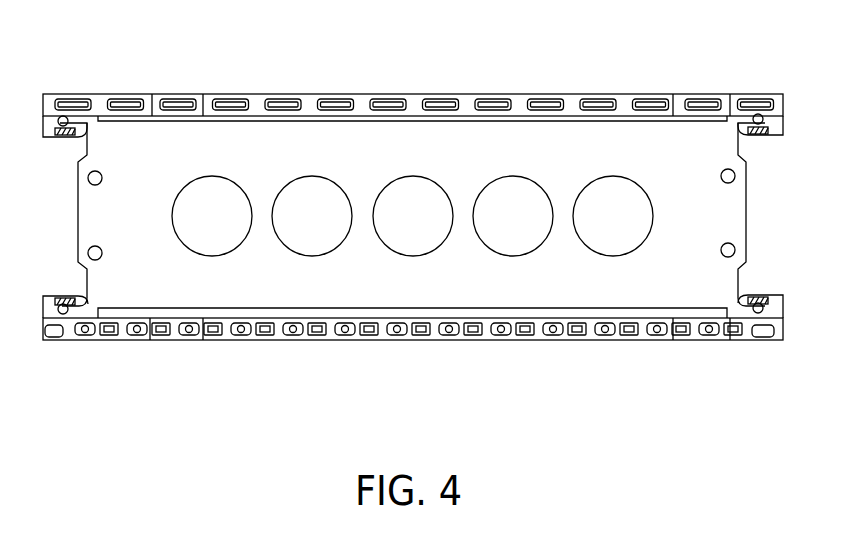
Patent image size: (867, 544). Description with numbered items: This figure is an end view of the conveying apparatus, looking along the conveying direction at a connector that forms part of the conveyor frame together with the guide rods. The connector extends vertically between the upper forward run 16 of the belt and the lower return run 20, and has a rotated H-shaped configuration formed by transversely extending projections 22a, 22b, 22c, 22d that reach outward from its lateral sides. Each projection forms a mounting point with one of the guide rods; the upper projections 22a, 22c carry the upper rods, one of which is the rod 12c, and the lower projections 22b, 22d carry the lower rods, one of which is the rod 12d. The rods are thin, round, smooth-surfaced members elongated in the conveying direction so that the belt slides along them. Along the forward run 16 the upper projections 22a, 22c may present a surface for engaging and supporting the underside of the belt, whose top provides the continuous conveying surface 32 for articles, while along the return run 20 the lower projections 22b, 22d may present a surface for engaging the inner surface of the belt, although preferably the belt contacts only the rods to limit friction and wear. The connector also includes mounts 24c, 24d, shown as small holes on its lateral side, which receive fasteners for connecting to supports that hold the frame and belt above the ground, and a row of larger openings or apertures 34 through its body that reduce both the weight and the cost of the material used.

The forward run 16 is at (282, 86).
The conveying surface 32 is at (604, 86).
The openings or apertures 34 is at (417, 193).
The return run 20 is at (436, 346).
The projection 22a is at (84, 111).
The projection 22b is at (84, 323).
The projection 22c is at (743, 111).
The projection 22d is at (742, 323).
The rod 12c is at (63, 132).
The rod 12d is at (63, 297).
The mount 24c is at (87, 180).
The mount 24d is at (88, 251).